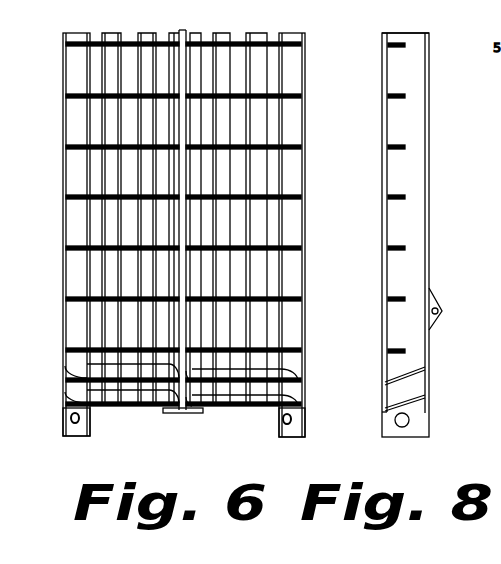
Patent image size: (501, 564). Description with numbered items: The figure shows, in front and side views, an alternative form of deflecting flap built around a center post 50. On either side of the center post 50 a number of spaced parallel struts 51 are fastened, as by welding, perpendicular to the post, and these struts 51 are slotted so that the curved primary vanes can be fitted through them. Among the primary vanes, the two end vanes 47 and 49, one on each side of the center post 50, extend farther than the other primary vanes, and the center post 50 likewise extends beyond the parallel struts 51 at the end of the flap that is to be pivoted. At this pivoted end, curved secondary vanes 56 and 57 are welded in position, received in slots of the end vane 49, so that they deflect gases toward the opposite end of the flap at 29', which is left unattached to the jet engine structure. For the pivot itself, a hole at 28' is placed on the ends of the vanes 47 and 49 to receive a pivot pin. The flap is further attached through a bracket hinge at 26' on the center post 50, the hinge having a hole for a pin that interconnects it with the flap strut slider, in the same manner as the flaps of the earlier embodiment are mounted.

In FIG. 6, the unattached end of flap 29' is at (203, 207).
In FIG. 8, the unattached end of flap 29' is at (412, 19).
In FIG. 6, the struts 51 is at (289, 91).
In FIG. 8, the struts 51 is at (396, 198).
In FIG. 6, the secondary vane 56 is at (298, 371).
In FIG. 8, the secondary vane 56 is at (407, 371).
In FIG. 6, the secondary vane 57 is at (297, 398).
In FIG. 8, the secondary vane 57 is at (407, 399).
In FIG. 6, the pivot hole 28' is at (157, 419).
In FIG. 8, the pivot hole 28' is at (430, 421).
In FIG. 6, the end primary vane 47 is at (79, 428).
In FIG. 6, the end primary vane 49 is at (298, 425).
In FIG. 6, the center post 50 is at (193, 392).
In FIG. 8, the bracket hinge 26' is at (450, 309).